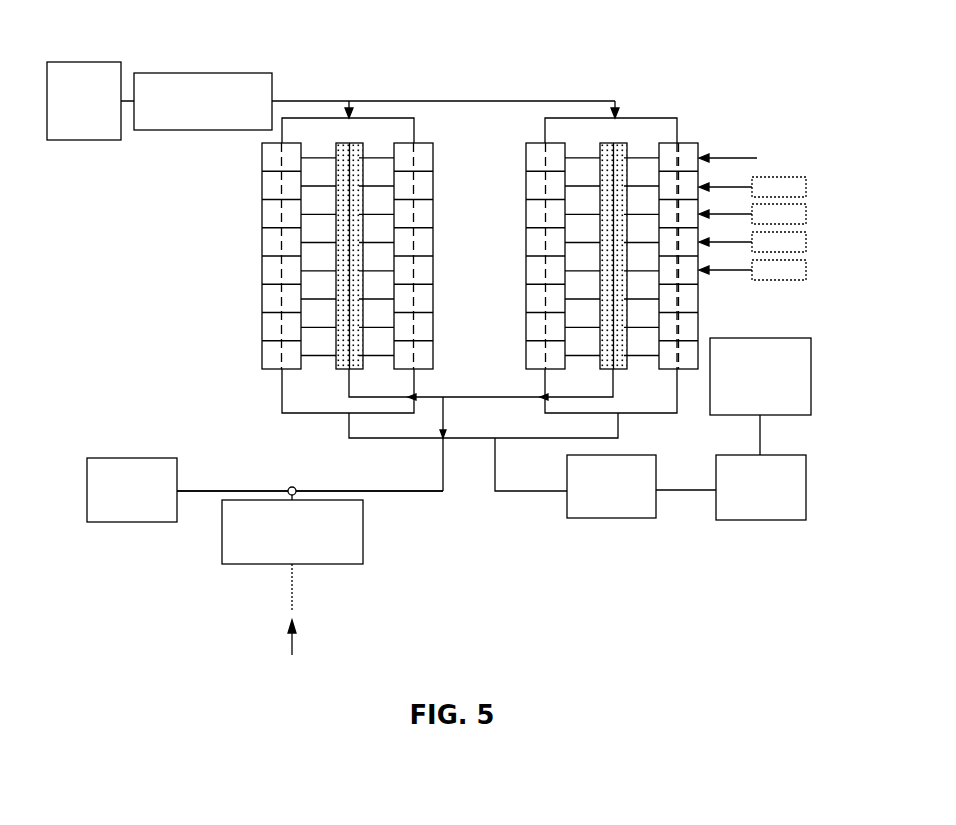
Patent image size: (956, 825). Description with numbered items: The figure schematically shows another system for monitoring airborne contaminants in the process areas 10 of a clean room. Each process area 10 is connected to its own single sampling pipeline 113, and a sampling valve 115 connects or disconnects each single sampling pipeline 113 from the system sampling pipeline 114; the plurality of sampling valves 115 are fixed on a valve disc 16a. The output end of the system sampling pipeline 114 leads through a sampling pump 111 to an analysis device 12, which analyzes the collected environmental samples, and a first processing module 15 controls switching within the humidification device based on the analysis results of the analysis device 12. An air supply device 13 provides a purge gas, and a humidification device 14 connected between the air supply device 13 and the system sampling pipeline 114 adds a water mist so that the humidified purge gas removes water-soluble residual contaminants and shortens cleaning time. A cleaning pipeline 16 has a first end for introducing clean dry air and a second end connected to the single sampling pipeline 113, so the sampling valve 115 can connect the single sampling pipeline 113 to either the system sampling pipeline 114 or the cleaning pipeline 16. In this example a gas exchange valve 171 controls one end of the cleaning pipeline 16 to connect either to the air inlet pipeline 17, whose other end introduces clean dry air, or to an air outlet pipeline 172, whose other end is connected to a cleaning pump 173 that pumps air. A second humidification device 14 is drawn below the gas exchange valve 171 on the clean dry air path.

The process area 10 is at (800, 191).
The analysis device 12 is at (760, 520).
The air supply device 13 is at (84, 62).
The humidification device 14 is at (196, 73).
The first processing module 15 is at (811, 375).
The cleaning pipeline 16 is at (641, 158).
The valve disc 16a is at (613, 143).
The air inlet pipeline 17 is at (292, 597).
The sampling pump 111 is at (610, 518).
The single sampling pipeline 113 is at (757, 158).
The system sampling pipeline 114 is at (677, 143).
The sampling valve 115 is at (688, 165).
The gas exchange valve 171 is at (292, 487).
The air outlet pipeline 172 is at (215, 491).
The cleaning pump 173 is at (135, 458).